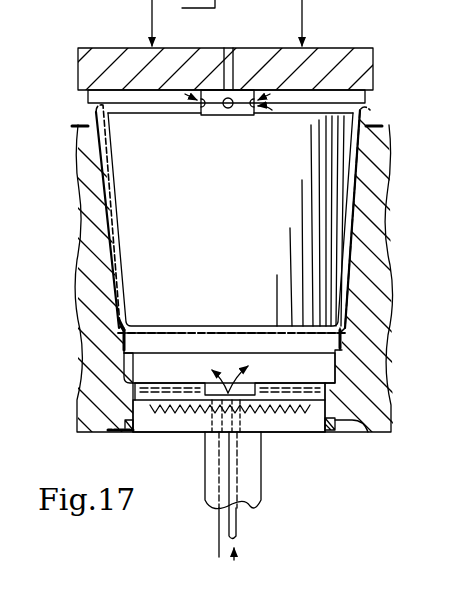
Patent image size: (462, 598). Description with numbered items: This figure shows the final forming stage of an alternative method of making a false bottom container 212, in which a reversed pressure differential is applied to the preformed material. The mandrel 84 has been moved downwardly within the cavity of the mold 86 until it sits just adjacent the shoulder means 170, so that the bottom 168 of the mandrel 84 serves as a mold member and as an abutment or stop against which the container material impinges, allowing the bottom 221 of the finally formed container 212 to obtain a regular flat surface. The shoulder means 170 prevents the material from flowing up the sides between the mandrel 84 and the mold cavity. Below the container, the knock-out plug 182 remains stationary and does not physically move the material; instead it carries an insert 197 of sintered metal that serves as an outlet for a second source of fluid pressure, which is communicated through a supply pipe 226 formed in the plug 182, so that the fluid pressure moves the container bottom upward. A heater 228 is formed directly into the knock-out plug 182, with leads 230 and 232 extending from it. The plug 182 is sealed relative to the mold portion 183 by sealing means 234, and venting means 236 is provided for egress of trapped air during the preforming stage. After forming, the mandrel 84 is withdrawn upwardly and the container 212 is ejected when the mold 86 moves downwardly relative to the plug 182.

The mandrel 84 is at (239, 219).
The mold 86 is at (380, 289).
The bottom of the mandrel 168 is at (188, 327).
The shoulder means 170 is at (118, 330).
The knock-out plug 182 is at (266, 414).
The mold portion 183 is at (325, 407).
The insert of sintered metal 197 is at (254, 385).
The false bottom container 212 is at (353, 222).
The bottom of the finally formed container 221 is at (157, 325).
The supply pipe 226 is at (240, 527).
The heater 228 is at (200, 409).
The lead 230 is at (206, 537).
The lead 232 is at (219, 557).
The sealing means 234 is at (368, 432).
The venting means 236 is at (190, 388).